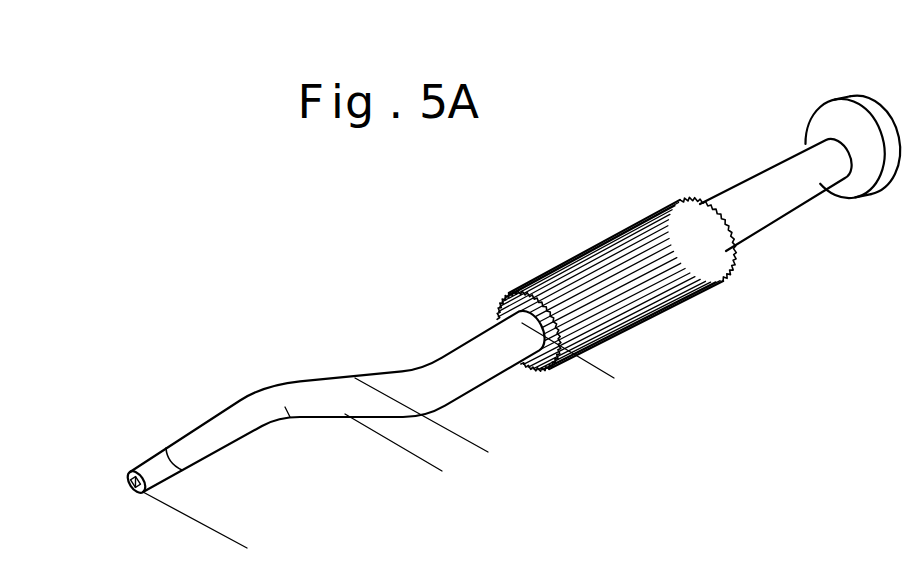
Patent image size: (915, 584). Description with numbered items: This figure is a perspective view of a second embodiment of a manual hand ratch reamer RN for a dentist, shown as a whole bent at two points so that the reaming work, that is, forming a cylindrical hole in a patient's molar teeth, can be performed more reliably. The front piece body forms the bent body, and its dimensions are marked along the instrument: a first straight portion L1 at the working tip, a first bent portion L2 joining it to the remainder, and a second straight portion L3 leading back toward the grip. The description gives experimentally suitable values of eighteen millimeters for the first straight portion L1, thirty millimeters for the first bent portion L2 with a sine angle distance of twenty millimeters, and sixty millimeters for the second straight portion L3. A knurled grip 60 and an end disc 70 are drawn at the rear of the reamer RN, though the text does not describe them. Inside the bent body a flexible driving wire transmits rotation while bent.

The knurled grip 60 is at (639, 239).
The end disc handle 70 is at (760, 176).
The manual hand ratch reamer RN is at (610, 227).
The first straight portion L1 is at (358, 457).
The first bent portion L2 is at (486, 455).
The second straight portion L3 is at (614, 378).